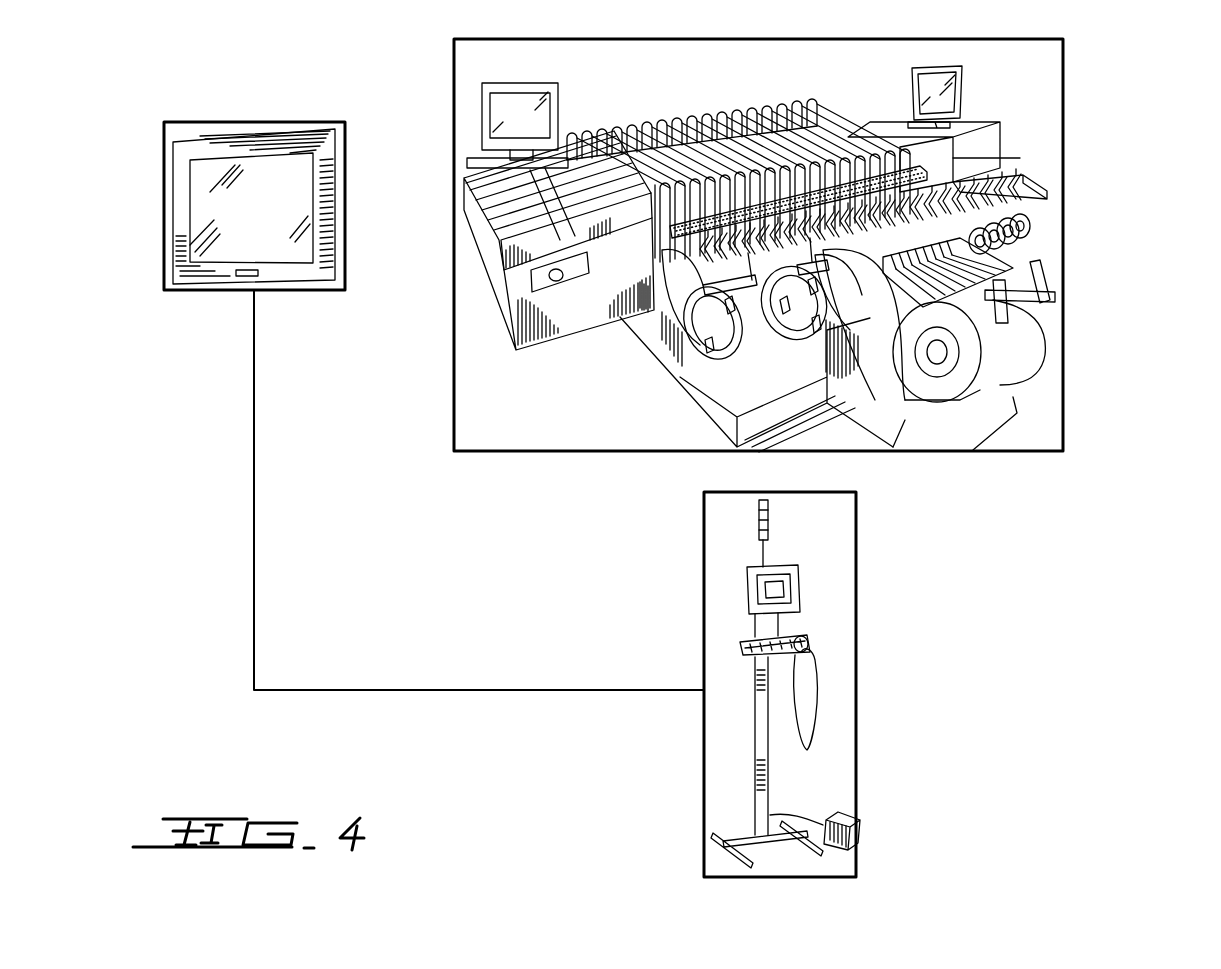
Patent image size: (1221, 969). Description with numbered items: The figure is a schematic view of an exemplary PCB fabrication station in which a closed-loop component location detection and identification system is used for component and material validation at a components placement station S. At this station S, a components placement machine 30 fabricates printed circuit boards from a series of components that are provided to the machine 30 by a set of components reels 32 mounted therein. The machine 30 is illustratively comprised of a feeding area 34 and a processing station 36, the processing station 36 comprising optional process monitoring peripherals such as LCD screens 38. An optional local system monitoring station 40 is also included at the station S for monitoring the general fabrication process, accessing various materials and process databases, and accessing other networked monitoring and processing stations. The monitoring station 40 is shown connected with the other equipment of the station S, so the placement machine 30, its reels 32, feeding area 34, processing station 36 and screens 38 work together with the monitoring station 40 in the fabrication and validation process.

The components placement machine 30 is at (1028, 163).
The components reels 32 is at (790, 330).
The feeding area 34 is at (1008, 262).
The processing station 36 is at (678, 185).
The LCD screens 38 is at (936, 80).
The local system monitoring station 40 is at (721, 774).
The components placement station S is at (1138, 355).